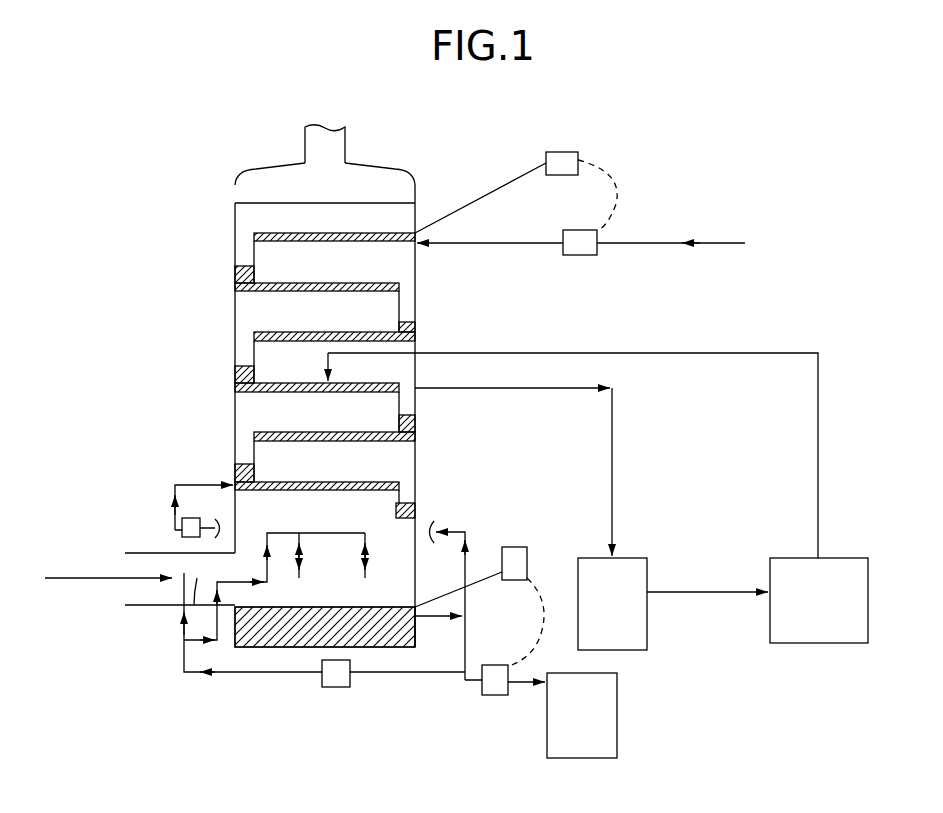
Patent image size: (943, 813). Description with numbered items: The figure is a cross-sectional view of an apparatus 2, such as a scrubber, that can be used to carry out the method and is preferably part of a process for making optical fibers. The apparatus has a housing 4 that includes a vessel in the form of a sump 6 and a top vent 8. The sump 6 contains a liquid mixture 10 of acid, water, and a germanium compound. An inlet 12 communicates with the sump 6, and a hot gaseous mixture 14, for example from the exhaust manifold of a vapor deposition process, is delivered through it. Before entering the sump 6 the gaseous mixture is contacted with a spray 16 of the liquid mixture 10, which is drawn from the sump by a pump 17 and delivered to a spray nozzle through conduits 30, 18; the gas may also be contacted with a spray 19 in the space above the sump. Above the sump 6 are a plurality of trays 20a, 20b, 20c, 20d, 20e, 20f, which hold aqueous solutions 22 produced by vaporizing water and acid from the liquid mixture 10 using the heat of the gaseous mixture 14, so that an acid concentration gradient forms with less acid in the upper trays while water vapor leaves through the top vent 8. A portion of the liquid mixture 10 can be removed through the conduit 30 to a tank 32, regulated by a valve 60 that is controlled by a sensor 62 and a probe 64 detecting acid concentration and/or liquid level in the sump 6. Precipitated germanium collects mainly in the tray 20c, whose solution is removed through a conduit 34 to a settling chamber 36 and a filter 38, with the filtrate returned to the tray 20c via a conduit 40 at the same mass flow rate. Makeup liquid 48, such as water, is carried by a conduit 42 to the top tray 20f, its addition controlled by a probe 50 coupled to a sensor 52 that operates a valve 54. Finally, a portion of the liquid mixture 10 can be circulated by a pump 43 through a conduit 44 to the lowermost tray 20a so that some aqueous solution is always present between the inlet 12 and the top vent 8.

The apparatus 2 is at (178, 178).
The housing 4 is at (393, 170).
The sump 6 is at (233, 635).
The top vent 8 is at (304, 150).
The liquid mixture 10 is at (268, 637).
The inlet 12 is at (134, 607).
The gaseous mixture 14 is at (72, 577).
The spray 16 is at (172, 583).
The pump 17 is at (343, 688).
The conduit 18 is at (296, 675).
The spray 19 is at (365, 576).
The tray 20a is at (276, 491).
The tray 20b is at (270, 442).
The tray 20c is at (276, 393).
The tray 20d is at (270, 342).
The tray 20e is at (276, 292).
The tray 20f is at (276, 243).
The aqueous solutions 22 is at (336, 234).
The conduit 30 is at (434, 620).
The tank 32 is at (618, 707).
The conduit 34 is at (488, 388).
The settling chamber 36 is at (630, 558).
The filter 38 is at (850, 558).
The conduit 40 is at (819, 503).
The conduit 42 is at (493, 243).
The pump 43 is at (176, 537).
The conduit 44 is at (172, 512).
The makeup liquid 48 is at (716, 243).
The probe 50 is at (493, 190).
The sensor 52 is at (566, 152).
The valve 54 is at (584, 256).
The valve 60 is at (498, 696).
The sensor 62 is at (520, 546).
The probe 64 is at (494, 585).